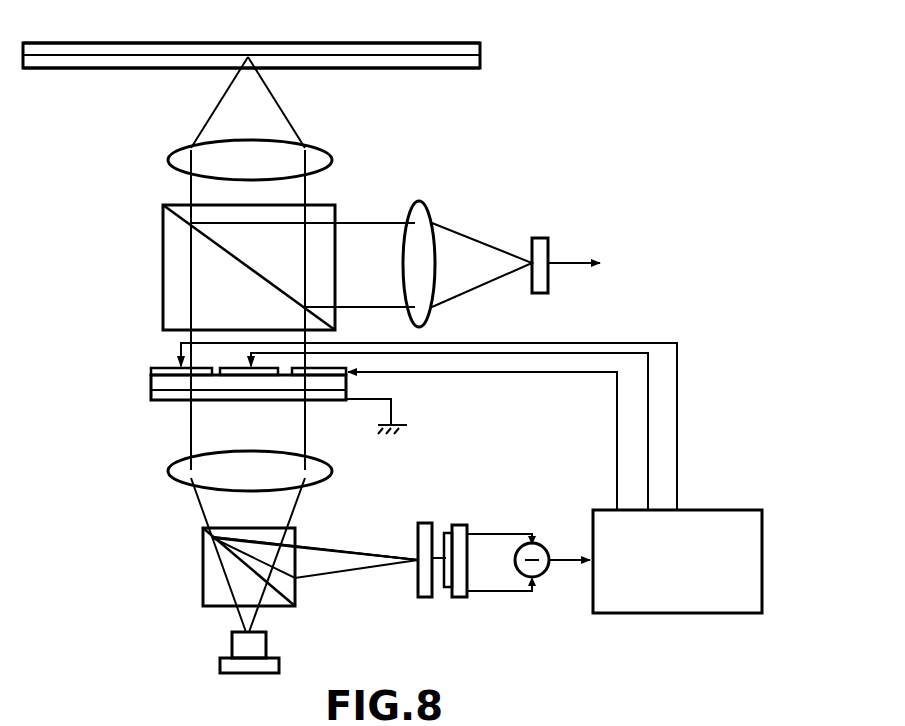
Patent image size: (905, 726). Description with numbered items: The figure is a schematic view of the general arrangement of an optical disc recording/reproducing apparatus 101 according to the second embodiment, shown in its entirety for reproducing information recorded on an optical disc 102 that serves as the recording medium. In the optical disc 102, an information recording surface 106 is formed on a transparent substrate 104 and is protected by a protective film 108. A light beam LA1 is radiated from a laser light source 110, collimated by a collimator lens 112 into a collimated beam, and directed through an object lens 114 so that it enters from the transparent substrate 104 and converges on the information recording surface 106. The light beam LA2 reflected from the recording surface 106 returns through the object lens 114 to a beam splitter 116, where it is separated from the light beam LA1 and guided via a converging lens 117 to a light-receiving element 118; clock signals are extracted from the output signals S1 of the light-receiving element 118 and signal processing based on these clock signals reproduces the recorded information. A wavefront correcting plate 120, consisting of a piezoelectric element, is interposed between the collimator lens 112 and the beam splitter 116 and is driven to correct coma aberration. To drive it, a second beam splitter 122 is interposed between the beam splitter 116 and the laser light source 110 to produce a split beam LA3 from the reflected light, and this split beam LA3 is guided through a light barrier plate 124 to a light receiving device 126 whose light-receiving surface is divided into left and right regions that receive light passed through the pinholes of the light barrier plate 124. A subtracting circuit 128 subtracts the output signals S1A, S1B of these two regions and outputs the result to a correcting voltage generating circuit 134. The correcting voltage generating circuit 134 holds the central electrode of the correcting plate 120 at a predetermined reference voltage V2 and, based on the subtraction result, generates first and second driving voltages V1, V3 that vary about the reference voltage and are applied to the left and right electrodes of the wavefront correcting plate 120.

The optical disc recording/reproducing apparatus 101 is at (677, 290).
The optical disc 102 is at (490, 57).
The transparent substrate 104 is at (435, 68).
The information recording surface 106 is at (445, 51).
The protective film 108 is at (368, 44).
The laser light source 110 is at (266, 650).
The collimator lens 112 is at (185, 478).
The object lens 114 is at (320, 150).
The beam splitter 116 is at (163, 254).
The converging lens 117 is at (432, 215).
The light-receiving element 118 is at (550, 250).
The wavefront correcting plate 120 is at (148, 378).
The beam splitter 122 is at (203, 592).
The light barrier plate 124 is at (421, 597).
The light receiving device 126 is at (460, 598).
The subtracting circuit 128 is at (536, 542).
The correcting voltage generating circuit 134 is at (690, 615).
The light beam LA1 is at (305, 196).
The light beam LA2 is at (500, 240).
The split beam LA3 is at (362, 553).
The output signals S1 is at (572, 270).
The output signal S1A is at (482, 533).
The output signal S1B is at (500, 592).
The first driving voltage V1 is at (678, 458).
The reference voltage V2 is at (648, 408).
The second driving voltage V3 is at (617, 425).